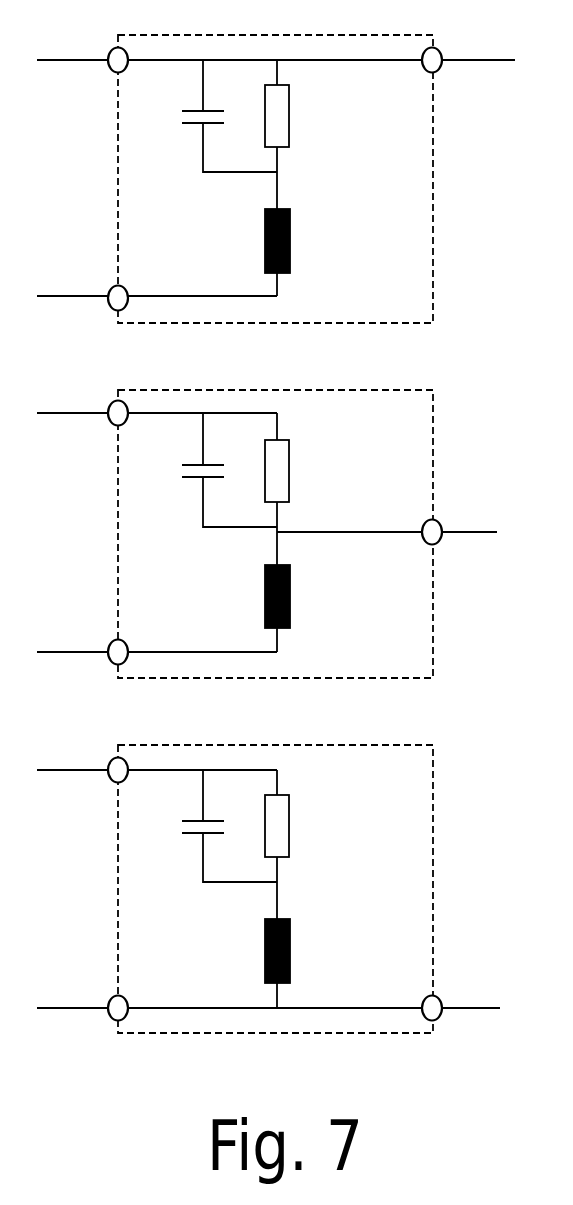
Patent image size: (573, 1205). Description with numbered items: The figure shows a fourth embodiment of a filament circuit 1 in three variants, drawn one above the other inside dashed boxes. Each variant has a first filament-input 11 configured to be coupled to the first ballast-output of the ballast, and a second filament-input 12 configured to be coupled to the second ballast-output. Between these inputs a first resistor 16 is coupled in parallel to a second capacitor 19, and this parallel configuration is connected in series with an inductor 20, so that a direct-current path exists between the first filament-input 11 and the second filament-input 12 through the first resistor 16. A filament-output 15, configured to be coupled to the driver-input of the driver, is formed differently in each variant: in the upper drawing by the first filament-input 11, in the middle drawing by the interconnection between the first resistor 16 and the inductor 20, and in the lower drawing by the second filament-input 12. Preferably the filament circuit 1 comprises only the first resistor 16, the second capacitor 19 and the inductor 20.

The filament circuit 1 is at (381, 323).
The first filament-input 11 is at (111, 70).
The second filament-input 12 is at (112, 288).
The filament-output 15 is at (440, 70).
The first resistor 16 is at (289, 114).
The second capacitor 19 is at (223, 471).
The inductor 20 is at (290, 240).